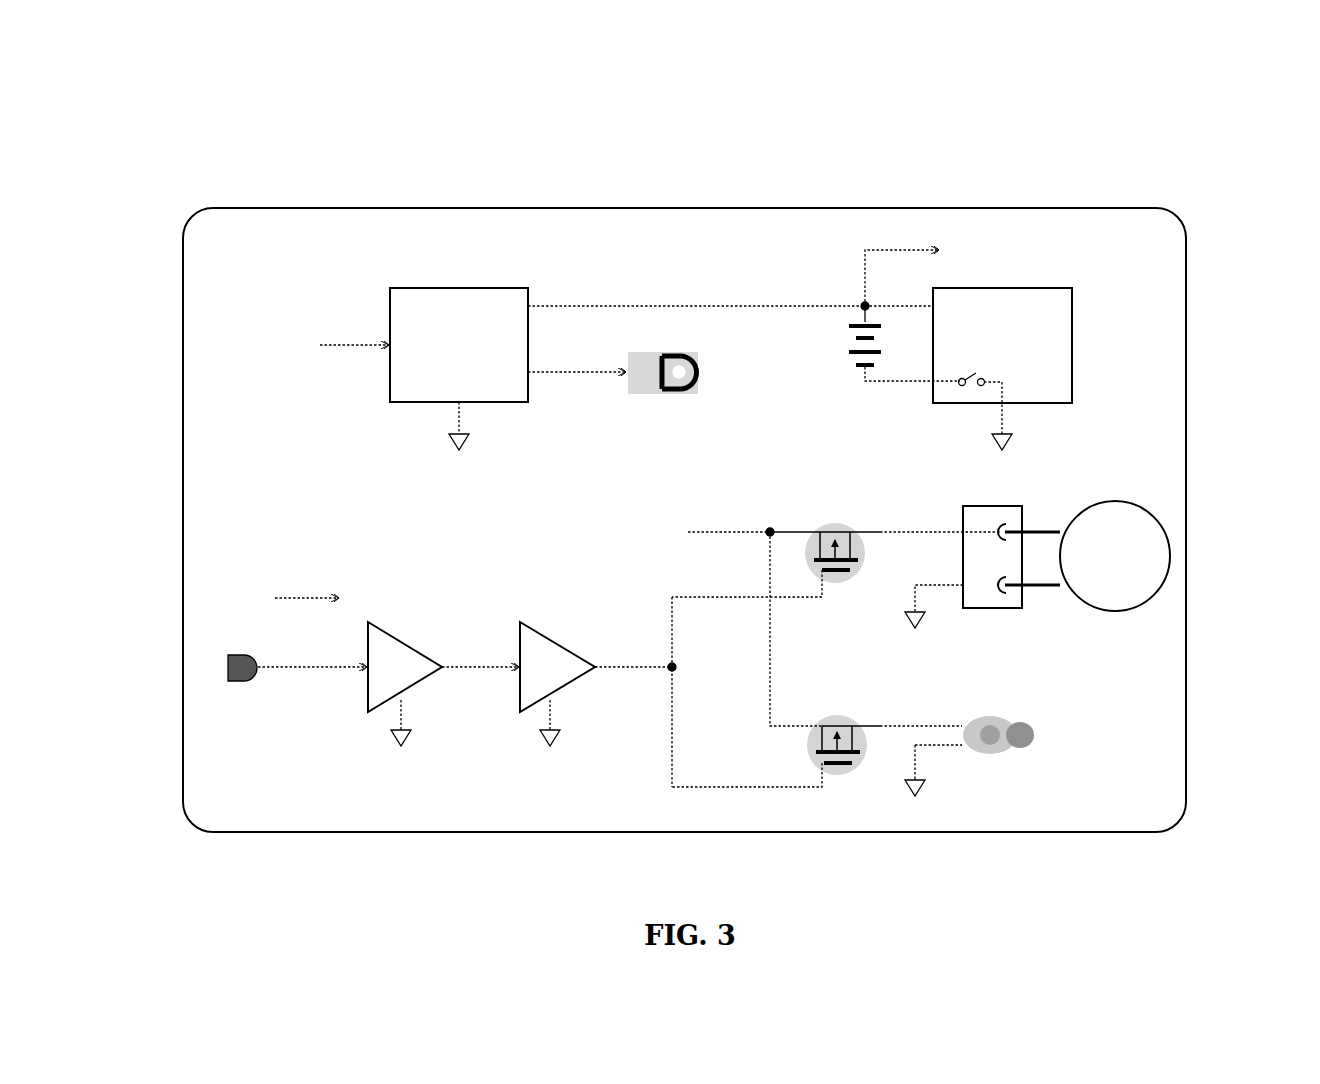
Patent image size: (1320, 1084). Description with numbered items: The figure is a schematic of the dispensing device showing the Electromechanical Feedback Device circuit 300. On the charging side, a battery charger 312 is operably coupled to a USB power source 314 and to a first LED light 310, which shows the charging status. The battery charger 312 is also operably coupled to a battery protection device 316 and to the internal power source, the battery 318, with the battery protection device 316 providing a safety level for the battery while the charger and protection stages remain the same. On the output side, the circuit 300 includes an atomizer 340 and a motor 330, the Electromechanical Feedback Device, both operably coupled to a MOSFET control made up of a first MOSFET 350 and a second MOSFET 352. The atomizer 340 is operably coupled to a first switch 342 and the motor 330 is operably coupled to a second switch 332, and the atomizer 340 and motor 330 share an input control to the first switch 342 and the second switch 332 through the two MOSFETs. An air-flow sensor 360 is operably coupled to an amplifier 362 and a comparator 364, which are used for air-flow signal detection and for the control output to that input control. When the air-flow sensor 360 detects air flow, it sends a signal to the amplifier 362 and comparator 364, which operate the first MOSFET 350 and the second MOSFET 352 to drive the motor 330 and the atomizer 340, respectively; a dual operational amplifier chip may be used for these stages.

The Electromechanical Feedback Device circuit 300 is at (500, 146).
The first LED light 310 is at (665, 392).
The battery charger 312 is at (405, 293).
The USB power source 314 is at (227, 337).
The battery protection device 316 is at (1073, 322).
The battery 318 is at (942, 230).
The motor 330 is at (1040, 730).
The second switch 332 is at (912, 800).
The atomizer 340 is at (1172, 552).
The first switch 342 is at (975, 610).
The first MOSFET 350 is at (820, 790).
The second MOSFET 352 is at (847, 530).
The air-flow sensor 360 is at (233, 655).
The amplifier 362 is at (373, 688).
The comparator 364 is at (537, 665).